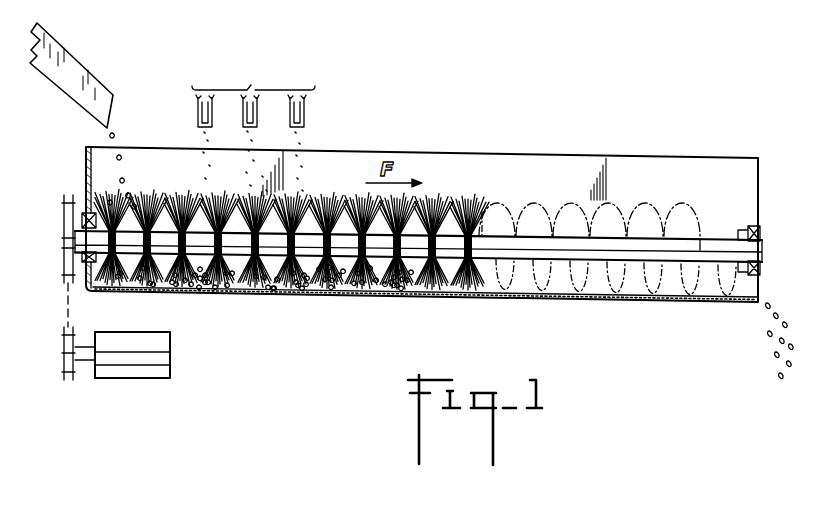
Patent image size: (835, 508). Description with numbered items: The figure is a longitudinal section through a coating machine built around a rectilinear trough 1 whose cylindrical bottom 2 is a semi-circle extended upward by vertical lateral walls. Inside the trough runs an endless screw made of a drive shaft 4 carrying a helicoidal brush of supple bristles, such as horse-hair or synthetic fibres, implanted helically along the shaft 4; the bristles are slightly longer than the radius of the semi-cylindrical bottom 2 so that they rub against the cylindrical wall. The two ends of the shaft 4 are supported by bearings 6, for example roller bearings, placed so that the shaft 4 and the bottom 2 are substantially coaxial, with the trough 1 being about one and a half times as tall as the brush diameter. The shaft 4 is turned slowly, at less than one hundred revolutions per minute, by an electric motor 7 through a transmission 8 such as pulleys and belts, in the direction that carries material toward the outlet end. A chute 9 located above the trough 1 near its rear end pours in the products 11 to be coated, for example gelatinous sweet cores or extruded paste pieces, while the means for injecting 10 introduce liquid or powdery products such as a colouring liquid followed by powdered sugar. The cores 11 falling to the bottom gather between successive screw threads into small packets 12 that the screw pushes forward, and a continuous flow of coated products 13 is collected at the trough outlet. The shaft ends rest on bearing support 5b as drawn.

The trough 1 is at (635, 155).
The cylindrical bottom 2 is at (418, 246).
The drive shaft 4 is at (540, 291).
The left bearing 5b is at (89, 237).
The bearings 6 is at (762, 233).
The electric motor 7 is at (165, 380).
The transmission 8 is at (64, 300).
The chute 9 is at (65, 62).
The means for injecting 10 is at (399, 125).
The products to be coated 11 is at (124, 170).
The packet of cores 12 is at (246, 296).
The coated products 13 is at (757, 325).